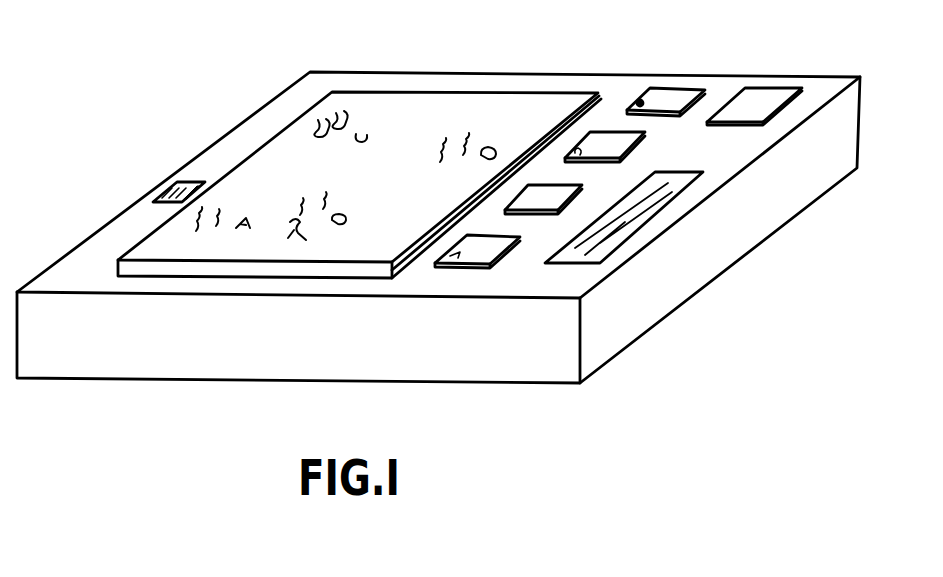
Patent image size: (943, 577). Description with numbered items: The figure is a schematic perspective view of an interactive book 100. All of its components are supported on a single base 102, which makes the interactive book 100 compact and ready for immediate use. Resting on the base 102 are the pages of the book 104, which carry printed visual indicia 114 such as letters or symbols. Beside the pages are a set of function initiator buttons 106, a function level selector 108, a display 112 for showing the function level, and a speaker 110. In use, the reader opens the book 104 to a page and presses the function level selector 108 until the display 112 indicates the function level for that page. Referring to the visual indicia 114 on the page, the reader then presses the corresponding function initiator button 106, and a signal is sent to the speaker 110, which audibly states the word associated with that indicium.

The interactive book 100 is at (343, 57).
The base 102 is at (50, 367).
The pages of the book 104 is at (507, 92).
The function initiator buttons 106 is at (667, 95).
The function level selector 108 is at (777, 92).
The speaker 110 is at (698, 169).
The display 112 is at (180, 182).
The visual indicia 114 is at (372, 119).